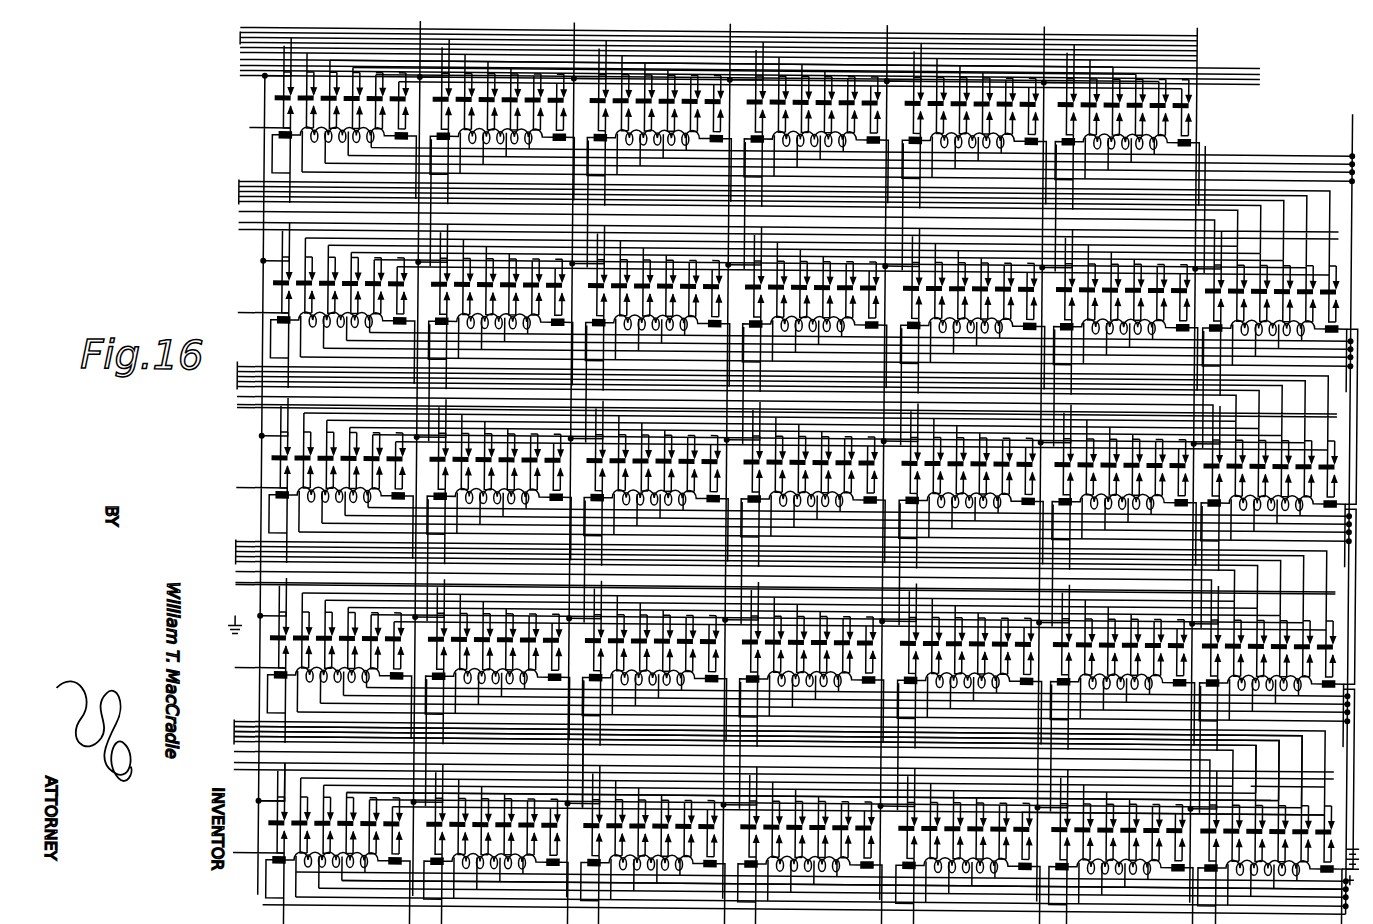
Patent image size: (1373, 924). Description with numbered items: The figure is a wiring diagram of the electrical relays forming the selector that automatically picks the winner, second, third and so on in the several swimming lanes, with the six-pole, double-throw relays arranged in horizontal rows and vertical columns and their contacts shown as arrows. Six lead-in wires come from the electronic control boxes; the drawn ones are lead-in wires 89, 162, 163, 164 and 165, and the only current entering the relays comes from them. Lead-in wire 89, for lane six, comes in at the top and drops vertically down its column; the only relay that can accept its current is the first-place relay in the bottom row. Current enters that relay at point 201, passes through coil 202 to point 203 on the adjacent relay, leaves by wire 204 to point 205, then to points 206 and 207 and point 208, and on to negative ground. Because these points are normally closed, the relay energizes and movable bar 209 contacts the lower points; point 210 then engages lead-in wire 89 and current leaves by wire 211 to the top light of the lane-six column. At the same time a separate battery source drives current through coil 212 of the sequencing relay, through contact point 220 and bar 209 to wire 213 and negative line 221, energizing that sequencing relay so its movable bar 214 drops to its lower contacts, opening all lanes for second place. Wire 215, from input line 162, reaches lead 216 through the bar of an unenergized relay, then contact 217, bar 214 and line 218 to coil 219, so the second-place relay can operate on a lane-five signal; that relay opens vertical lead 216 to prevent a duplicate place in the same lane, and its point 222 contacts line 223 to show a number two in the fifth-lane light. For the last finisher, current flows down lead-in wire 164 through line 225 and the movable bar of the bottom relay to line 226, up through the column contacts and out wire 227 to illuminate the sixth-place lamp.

The lead-in wire 89 is at (1200, 54).
The lead-in wire 162 is at (1048, 52).
The lead-in wire 163 is at (892, 54).
The lead-in wire 164 is at (735, 56).
The lead-in wire 165 is at (580, 56).
The point 201 is at (1198, 864).
The coil 202 is at (1080, 858).
The point 203 is at (1020, 822).
The wire 204 is at (880, 860).
The point 205 is at (700, 822).
The point 206 is at (698, 808).
The point 207 is at (548, 790).
The point 208 is at (270, 803).
The movable bar 209 is at (1128, 800).
The point 210 is at (1022, 856).
The wire 211 is at (976, 732).
The coil 212 is at (1264, 862).
The wire 213 is at (1326, 860).
The movable bar 214 is at (1305, 792).
The wire 215 is at (893, 858).
The lead 216 is at (924, 742).
The contact 217 is at (1292, 800).
The line 218 is at (1305, 750).
The coil 219 is at (1000, 672).
The contact point 220 is at (1212, 806).
The negative line 221 is at (1318, 767).
The point 222 is at (906, 664).
The line 223 is at (246, 546).
The line 225 is at (608, 788).
The line 226 is at (545, 822).
The output wire 227 is at (1263, 66).